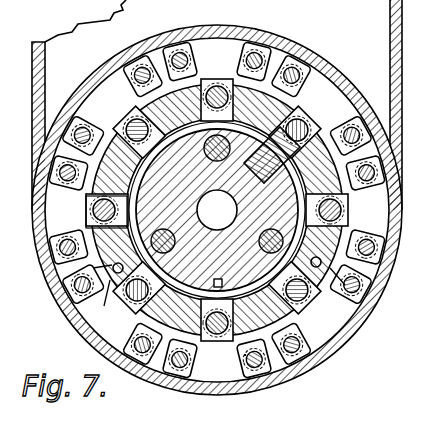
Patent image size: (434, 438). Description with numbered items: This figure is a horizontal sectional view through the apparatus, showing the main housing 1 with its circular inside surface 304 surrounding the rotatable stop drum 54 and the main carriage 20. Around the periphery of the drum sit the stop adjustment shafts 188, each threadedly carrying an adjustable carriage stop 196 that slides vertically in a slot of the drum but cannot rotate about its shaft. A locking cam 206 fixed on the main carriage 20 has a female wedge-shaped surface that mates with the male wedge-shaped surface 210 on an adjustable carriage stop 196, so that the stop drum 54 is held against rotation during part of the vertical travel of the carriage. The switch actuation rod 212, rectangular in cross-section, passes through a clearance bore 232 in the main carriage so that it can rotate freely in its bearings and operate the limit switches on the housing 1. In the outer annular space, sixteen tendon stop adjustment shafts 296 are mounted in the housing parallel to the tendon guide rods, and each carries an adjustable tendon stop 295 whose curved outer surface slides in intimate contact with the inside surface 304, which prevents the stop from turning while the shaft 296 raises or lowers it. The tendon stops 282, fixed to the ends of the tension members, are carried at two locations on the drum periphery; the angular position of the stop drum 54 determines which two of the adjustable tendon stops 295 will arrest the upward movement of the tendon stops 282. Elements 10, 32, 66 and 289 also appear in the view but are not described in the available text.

The main housing 1 is at (391, 15).
The rotor core 10 is at (164, 268).
The main carriage 20 is at (218, 279).
The core bolt hole 32 is at (286, 256).
The stop drum 54 is at (162, 348).
The gap ring 66 is at (192, 134).
The stop adjustment shaft 188 is at (138, 128).
The adjustable carriage stop 196 is at (134, 122).
The locking cam 206 is at (266, 128).
The male wedge-shaped surface 210 is at (203, 118).
The switch actuation rod 212 is at (217, 210).
The clearance bore 232 is at (239, 362).
The tendon stop 282 is at (333, 267).
The bolt seat 289 is at (88, 224).
The adjustable tendon stop 295 is at (292, 62).
The tendon stop adjustment shaft 296 is at (175, 56).
The inside surface of the main housing 304 is at (102, 88).